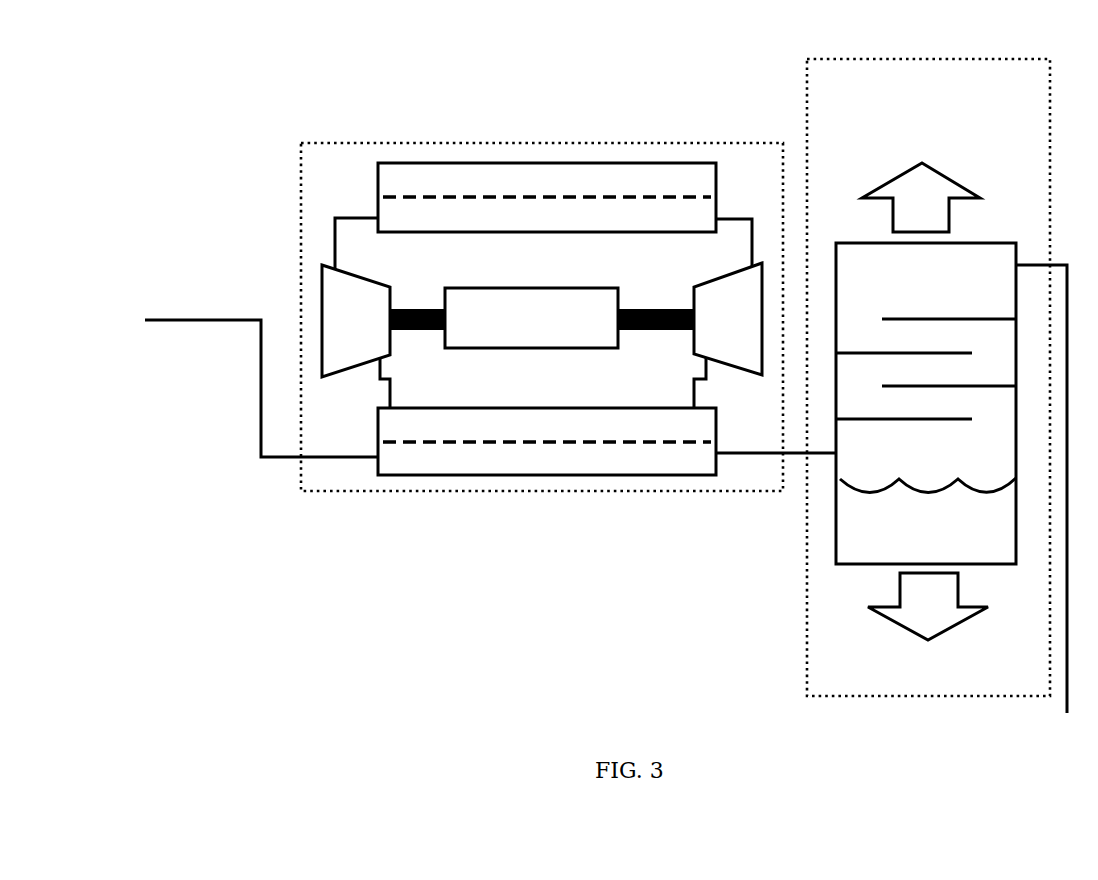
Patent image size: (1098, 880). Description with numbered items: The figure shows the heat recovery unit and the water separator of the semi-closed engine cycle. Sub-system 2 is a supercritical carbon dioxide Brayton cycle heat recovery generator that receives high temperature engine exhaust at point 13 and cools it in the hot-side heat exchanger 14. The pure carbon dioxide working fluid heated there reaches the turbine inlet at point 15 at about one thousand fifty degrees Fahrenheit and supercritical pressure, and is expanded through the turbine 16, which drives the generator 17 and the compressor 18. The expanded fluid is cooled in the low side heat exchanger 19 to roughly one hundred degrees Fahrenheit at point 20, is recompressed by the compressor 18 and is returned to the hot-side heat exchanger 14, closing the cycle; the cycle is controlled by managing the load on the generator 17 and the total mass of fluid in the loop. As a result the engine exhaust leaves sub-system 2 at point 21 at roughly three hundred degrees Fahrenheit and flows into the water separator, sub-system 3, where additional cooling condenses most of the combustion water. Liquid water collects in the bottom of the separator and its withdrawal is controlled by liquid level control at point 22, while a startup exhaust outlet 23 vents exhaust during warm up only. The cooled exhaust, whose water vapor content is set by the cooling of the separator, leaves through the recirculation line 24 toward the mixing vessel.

The heat recovery unit sub-system 2 is at (542, 312).
The water separator sub-system 3 is at (903, 377).
The exhaust inlet point 13 is at (261, 374).
The hot-side heat exchanger 14 is at (547, 425).
The turbine inlet point 15 is at (402, 383).
The turbine 16 is at (356, 321).
The generator 17 is at (542, 318).
The compressor 18 is at (728, 335).
The low side heat exchanger 19 is at (525, 216).
The compressor inlet point 20 is at (739, 224).
The cooled exhaust outlet point 21 is at (776, 439).
The liquid level control point 22 is at (926, 403).
The exhaust arrow 23 is at (921, 197).
The recirculation line 24 is at (1057, 489).